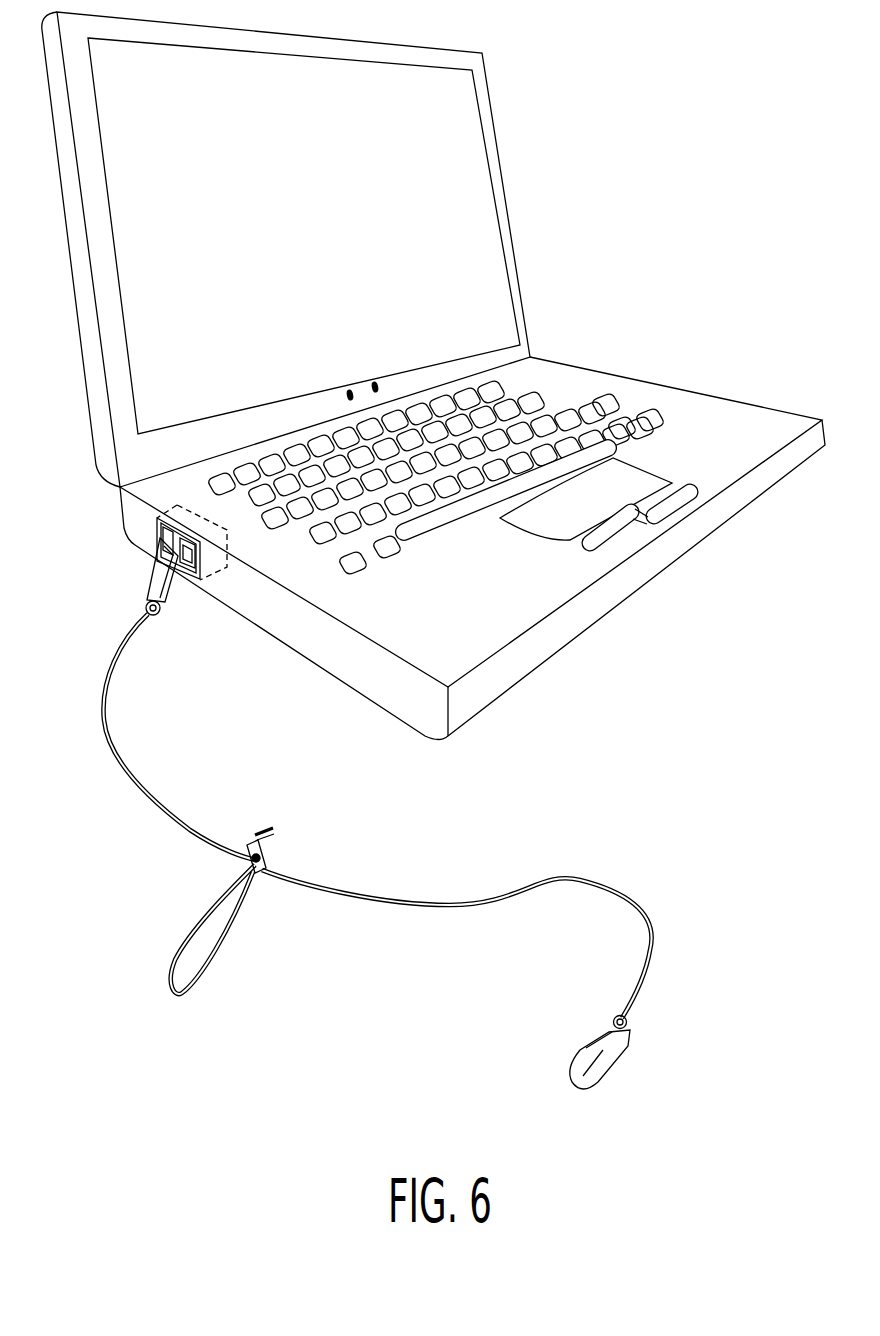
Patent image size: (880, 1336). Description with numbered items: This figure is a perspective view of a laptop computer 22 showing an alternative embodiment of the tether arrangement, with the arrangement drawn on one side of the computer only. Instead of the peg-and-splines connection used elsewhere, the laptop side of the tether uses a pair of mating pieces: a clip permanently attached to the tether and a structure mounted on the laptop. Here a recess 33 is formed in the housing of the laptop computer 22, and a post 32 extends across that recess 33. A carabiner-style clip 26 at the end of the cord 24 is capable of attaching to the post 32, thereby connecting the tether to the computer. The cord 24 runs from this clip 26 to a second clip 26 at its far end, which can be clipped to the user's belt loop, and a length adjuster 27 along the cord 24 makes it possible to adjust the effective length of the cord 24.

The laptop computer 22 is at (638, 592).
The cord 24 is at (118, 752).
The carabiner-style clip 26 is at (165, 585).
The length adjuster 27 is at (275, 858).
The post 32 is at (160, 507).
The recess 33 is at (160, 538).